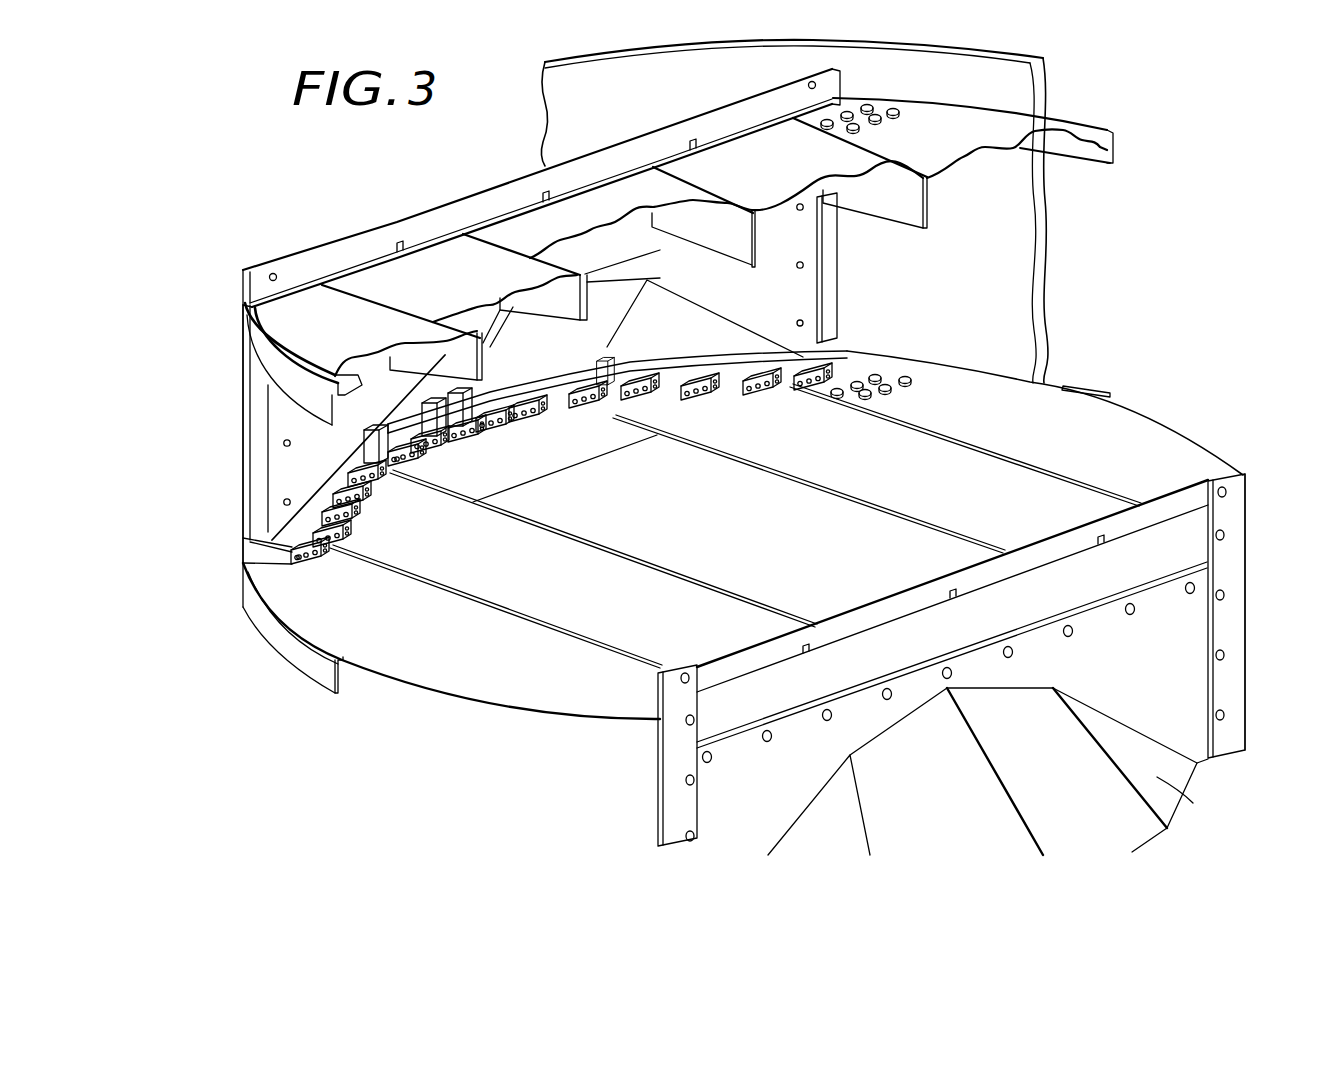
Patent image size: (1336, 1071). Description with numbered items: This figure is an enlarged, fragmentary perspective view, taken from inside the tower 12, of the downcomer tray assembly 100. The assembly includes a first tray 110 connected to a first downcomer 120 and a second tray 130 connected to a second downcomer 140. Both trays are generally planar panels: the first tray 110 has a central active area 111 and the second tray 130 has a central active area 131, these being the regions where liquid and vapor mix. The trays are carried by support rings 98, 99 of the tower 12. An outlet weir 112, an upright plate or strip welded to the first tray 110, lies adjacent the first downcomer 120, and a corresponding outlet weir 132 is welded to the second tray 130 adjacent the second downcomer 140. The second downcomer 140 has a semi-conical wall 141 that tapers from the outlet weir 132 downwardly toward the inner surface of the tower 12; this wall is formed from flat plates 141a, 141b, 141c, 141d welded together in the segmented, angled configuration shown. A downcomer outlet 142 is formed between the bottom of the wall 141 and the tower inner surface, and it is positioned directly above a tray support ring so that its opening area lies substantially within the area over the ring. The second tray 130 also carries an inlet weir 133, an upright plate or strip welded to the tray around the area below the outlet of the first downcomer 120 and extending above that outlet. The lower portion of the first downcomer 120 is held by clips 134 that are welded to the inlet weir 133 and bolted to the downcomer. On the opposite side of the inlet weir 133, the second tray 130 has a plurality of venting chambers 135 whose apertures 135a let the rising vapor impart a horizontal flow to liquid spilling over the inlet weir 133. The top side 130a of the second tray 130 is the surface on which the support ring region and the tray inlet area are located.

The downcomer tray assembly 100 is at (302, 192).
The tower 12 is at (969, 283).
The support ring 98 is at (295, 658).
The support ring 99 is at (264, 360).
The first tray 110 is at (971, 118).
The central active area 111 is at (948, 153).
The outlet weir 112 is at (730, 118).
The first downcomer 120 is at (818, 292).
The second tray 130 is at (957, 385).
The top side 130a is at (1050, 397).
The central active area 131 is at (918, 400).
The outlet weir 132 is at (1033, 563).
The inlet weir 133 is at (245, 563).
The clips 134 is at (370, 433).
The venting chambers 135 is at (538, 392).
The apertures 135a is at (627, 400).
The second downcomer 140 is at (1238, 620).
The semi-conical wall 141 is at (1197, 682).
The flat plate 141a is at (855, 848).
The flat plate 141b is at (955, 805).
The flat plate 141c is at (1070, 762).
The flat plate 141d is at (1142, 747).
The downcomer outlet 142 is at (1194, 824).